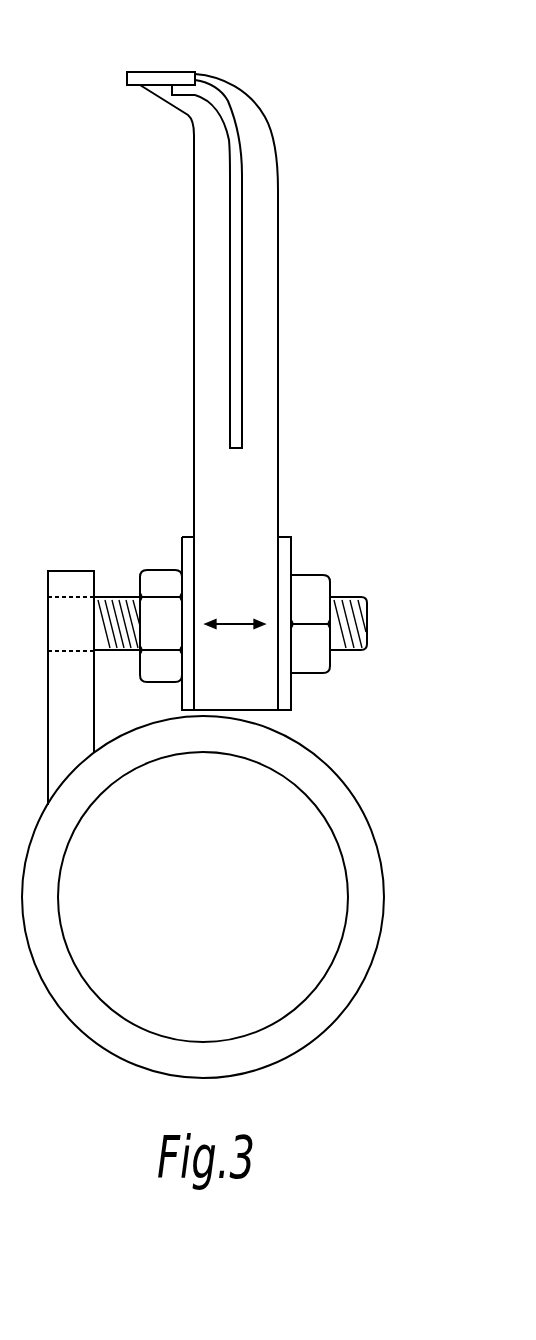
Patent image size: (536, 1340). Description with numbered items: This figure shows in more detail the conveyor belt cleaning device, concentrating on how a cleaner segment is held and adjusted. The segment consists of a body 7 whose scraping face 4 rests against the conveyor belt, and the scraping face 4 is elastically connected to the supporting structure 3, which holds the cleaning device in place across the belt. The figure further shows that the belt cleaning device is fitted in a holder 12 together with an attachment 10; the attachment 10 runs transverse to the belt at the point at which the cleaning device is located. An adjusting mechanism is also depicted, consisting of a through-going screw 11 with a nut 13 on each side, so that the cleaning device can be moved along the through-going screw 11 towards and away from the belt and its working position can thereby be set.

The supporting structure 3 is at (237, 355).
The scraping face 4 is at (155, 77).
The body 7 is at (230, 123).
The attachment 10 is at (360, 852).
The through-going screw 11 is at (352, 608).
The holder 12 is at (187, 546).
The nut 13 is at (152, 578).